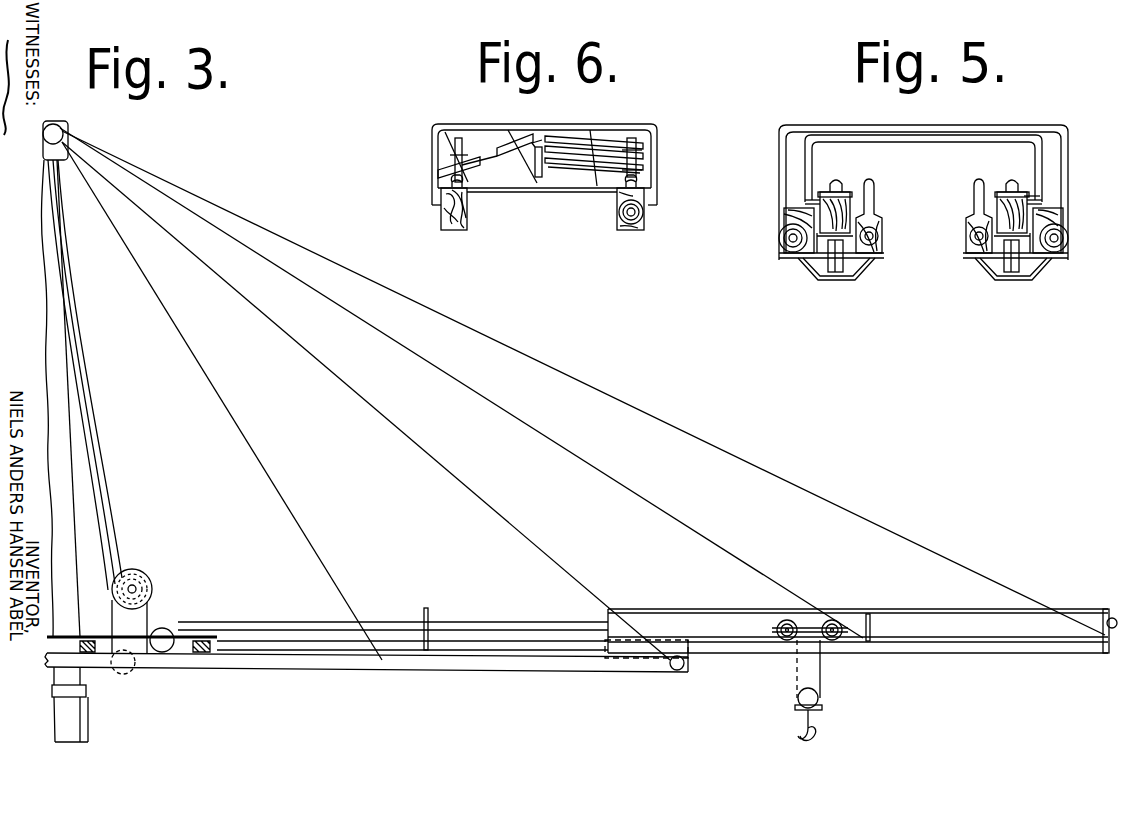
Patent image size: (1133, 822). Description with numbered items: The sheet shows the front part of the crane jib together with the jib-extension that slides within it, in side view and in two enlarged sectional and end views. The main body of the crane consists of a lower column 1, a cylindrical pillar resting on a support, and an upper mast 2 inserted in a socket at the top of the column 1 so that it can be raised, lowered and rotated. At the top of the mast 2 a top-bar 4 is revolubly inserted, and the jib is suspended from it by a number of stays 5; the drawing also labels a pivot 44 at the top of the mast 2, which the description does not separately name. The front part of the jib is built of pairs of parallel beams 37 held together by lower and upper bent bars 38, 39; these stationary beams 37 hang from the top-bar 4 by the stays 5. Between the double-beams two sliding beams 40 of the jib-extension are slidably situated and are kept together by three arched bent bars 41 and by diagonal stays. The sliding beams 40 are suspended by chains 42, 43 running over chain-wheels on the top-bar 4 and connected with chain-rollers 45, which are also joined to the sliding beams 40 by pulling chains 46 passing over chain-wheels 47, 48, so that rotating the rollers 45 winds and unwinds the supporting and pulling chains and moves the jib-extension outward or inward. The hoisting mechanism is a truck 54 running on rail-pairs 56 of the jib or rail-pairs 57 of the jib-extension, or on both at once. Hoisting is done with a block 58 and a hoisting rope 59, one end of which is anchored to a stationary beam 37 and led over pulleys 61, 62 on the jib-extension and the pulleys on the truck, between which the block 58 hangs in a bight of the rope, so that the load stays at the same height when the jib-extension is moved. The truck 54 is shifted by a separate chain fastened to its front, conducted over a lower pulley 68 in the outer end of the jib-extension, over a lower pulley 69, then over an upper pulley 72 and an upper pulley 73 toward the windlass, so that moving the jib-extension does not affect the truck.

In FIG. 3, the column 1 is at (85, 718).
In FIG. 3, the mast 2 is at (70, 672).
In FIG. 3, the top-bar 4 is at (68, 140).
In FIG. 3, the stays 5 is at (98, 546).
In FIG. 5, the parallel beams 37 is at (791, 238).
In FIG. 5, the lower bent bars 38 is at (856, 272).
In FIG. 5, the upper bent bars 39 is at (975, 121).
In FIG. 3, the sliding beams 40 is at (998, 650).
In FIG. 6, the sliding beams 40 is at (460, 216).
In FIG. 5, the sliding beams 40 is at (830, 215).
In FIG. 6, the arched bent bars 41 is at (614, 125).
In FIG. 5, the arched bent bars 41 is at (838, 137).
In FIG. 3, the chain 42 is at (797, 494).
In FIG. 3, the chain 43 is at (697, 530).
In FIG. 3, the pivot pin 44 is at (62, 130).
In FIG. 3, the chain-rollers 45 is at (134, 589).
In FIG. 3, the pulling chains 46 is at (296, 672).
In FIG. 3, the chain-wheel 47 is at (164, 647).
In FIG. 3, the chain-wheel 48 is at (683, 667).
In FIG. 3, the truck 54 is at (834, 624).
In FIG. 5, the rail-pairs 56 is at (974, 183).
In FIG. 5, the rail-pairs 57 is at (832, 183).
In FIG. 3, the block 58 is at (818, 700).
In FIG. 3, the hoisting rope 59 is at (795, 668).
In FIG. 5, the pulley 61 is at (808, 200).
In FIG. 6, the pulley 62 is at (455, 170).
In FIG. 6, the lower pulley 68 is at (613, 168).
In FIG. 5, the lower pulley 69 is at (1026, 196).
In FIG. 5, the upper pulley 72 is at (1028, 190).
In FIG. 6, the upper pulley 73 is at (640, 150).